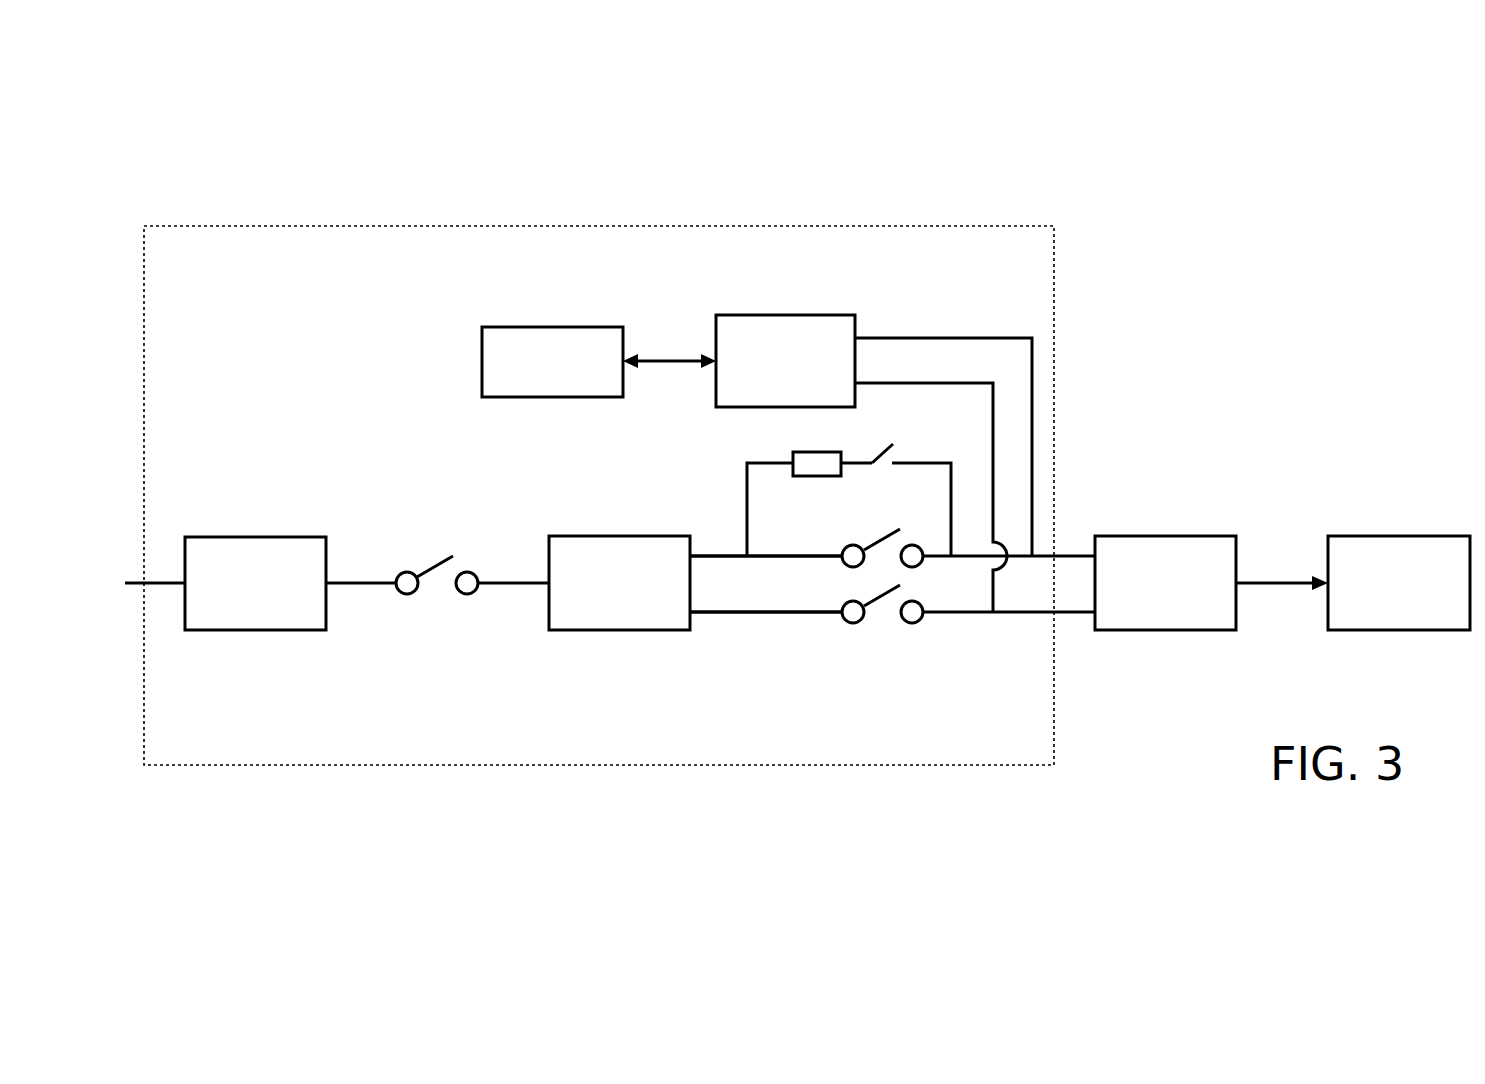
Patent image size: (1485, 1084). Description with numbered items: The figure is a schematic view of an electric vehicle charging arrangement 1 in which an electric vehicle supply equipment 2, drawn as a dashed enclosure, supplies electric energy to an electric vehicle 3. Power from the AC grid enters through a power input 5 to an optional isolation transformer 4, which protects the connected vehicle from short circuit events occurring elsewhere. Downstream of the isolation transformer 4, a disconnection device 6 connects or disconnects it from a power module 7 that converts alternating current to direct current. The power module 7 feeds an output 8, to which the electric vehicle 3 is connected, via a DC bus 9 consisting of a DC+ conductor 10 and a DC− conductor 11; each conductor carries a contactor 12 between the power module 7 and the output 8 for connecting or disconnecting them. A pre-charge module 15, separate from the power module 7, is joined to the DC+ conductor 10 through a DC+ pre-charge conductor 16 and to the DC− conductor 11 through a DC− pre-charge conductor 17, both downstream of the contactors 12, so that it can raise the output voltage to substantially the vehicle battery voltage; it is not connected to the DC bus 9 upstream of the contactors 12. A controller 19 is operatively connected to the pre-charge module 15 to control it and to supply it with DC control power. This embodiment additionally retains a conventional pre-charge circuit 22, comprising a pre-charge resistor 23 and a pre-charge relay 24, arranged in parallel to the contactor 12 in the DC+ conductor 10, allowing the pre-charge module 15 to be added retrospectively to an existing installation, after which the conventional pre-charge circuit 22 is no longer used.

The electric vehicle charging arrangement 1 is at (153, 173).
The electric vehicle supply equipment 2 is at (805, 226).
The electric vehicle 3 is at (1391, 597).
The isolation transformer 4 is at (246, 597).
The power input 5 is at (128, 583).
The disconnection device 6 is at (443, 562).
The power module 7 is at (611, 597).
The output 8 is at (1158, 597).
The DC bus 9 is at (802, 558).
The DC+ conductor 10 is at (718, 556).
The DC− conductor 11 is at (714, 614).
The contactor 12 is at (876, 542).
The pre-charge module 15 is at (772, 377).
The DC+ pre-charge conductor 16 is at (918, 338).
The DC− pre-charge conductor 17 is at (960, 383).
The controller 19 is at (540, 376).
The pre-charge circuit 22 is at (770, 463).
The pre-charge resistor 23 is at (822, 468).
The pre-charge relay 24 is at (878, 455).